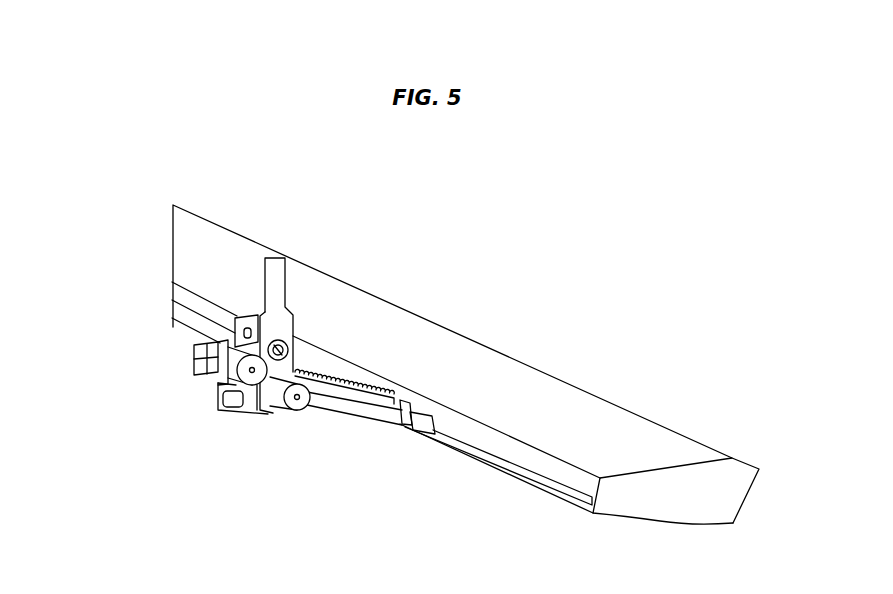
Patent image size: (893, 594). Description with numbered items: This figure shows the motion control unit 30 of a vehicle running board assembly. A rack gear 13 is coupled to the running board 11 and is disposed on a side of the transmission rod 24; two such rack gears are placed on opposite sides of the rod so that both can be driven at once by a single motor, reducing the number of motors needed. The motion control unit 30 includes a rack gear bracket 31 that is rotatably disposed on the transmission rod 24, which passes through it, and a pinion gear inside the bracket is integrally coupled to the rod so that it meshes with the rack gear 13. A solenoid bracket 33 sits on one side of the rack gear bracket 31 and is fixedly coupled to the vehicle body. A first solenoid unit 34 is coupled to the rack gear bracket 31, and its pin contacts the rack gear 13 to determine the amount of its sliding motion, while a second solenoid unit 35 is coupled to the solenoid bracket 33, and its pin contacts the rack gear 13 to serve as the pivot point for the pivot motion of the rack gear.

The running board 11 is at (485, 388).
The rack gear 13 is at (340, 388).
The transmission rod 24 is at (187, 308).
The motion control unit 30 is at (248, 416).
The rack gear bracket 31 is at (240, 317).
The solenoid bracket 33 is at (275, 282).
The first solenoid unit 34 is at (231, 407).
The second solenoid unit 35 is at (293, 404).